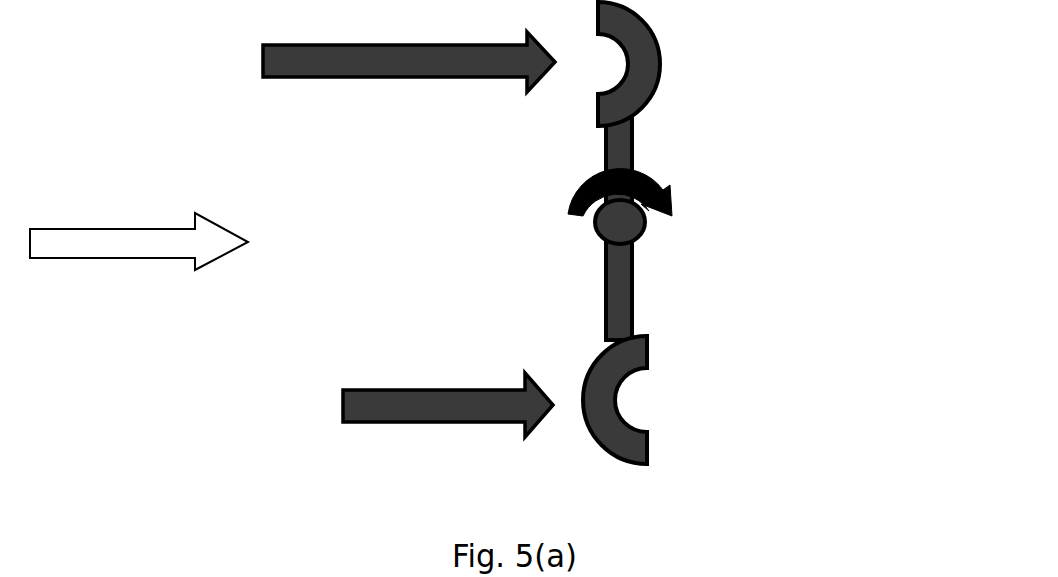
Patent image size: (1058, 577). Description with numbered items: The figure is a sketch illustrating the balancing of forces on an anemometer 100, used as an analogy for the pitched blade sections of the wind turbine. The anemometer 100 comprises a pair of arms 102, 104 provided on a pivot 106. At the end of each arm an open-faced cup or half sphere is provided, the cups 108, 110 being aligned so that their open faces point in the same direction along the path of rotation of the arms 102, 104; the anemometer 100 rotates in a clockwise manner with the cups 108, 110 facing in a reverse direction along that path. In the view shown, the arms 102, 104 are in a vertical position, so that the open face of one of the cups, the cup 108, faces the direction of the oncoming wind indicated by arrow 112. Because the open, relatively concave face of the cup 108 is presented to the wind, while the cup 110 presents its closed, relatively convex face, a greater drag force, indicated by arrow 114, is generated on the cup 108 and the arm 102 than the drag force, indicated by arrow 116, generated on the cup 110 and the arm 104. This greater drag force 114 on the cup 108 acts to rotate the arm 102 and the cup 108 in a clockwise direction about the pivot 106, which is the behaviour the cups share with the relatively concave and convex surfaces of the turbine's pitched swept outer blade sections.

The anemometer 100 is at (378, 203).
The arm 102 is at (632, 142).
The arm 104 is at (610, 285).
The pivot 106 is at (645, 230).
The cup 108 is at (643, 60).
The cup 110 is at (643, 357).
The arrow 112 is at (139, 237).
The arrow 114 is at (409, 55).
The arrow 116 is at (448, 400).